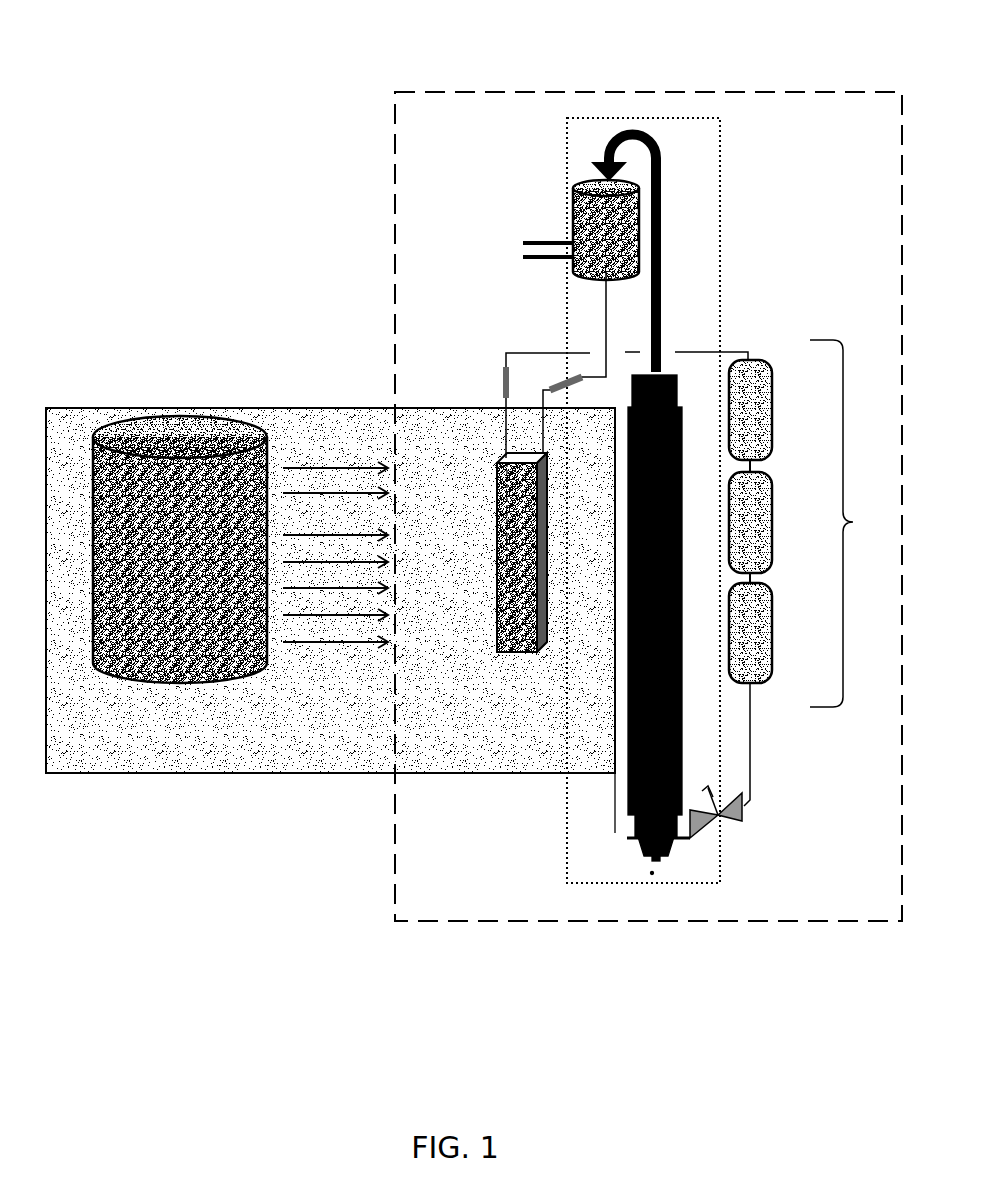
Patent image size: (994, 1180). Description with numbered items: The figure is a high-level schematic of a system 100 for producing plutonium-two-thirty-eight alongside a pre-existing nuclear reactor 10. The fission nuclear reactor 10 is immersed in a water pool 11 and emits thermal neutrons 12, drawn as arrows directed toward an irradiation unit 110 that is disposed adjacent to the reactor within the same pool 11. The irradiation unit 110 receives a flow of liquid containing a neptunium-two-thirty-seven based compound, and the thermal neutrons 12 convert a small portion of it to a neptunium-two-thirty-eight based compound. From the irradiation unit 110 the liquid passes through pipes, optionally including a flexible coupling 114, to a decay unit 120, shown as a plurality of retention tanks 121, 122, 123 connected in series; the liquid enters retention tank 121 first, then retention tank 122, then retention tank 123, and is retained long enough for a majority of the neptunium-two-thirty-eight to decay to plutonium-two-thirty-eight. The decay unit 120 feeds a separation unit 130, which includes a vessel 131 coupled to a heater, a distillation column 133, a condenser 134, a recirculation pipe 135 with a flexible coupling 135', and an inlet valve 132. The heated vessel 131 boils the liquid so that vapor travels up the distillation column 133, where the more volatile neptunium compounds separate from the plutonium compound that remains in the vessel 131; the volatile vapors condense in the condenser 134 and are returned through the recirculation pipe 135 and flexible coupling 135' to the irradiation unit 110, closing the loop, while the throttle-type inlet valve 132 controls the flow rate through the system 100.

The system 100 is at (820, 92).
The water pool 11 is at (66, 408).
The nuclear reactor 10 is at (148, 420).
The thermal neutrons 12 is at (296, 467).
The irradiation unit 110 is at (497, 520).
The separation unit 130 is at (722, 168).
The condenser 134 is at (573, 198).
The vessel 131 is at (632, 820).
The distillation column 133 is at (682, 423).
The recirculation pipe 135 is at (560, 362).
The flexible coupling 135' is at (522, 354).
The flexible coupling 114 is at (500, 388).
The retention tank 121 is at (772, 405).
The retention tank 122 is at (772, 520).
The retention tank 123 is at (772, 630).
The decay unit 120 is at (856, 523).
The inlet valve 132 is at (746, 810).